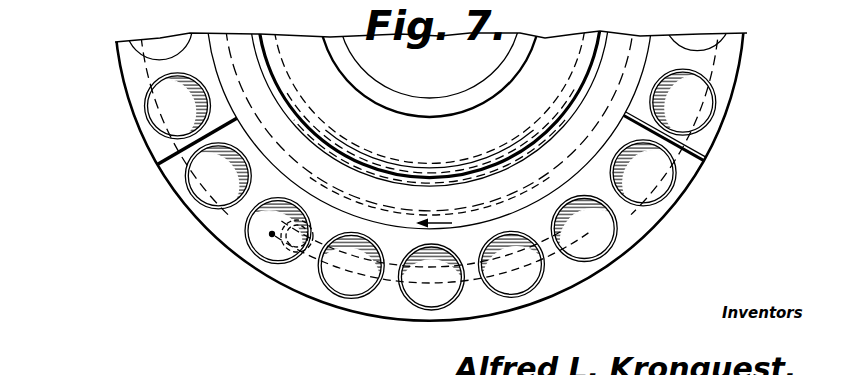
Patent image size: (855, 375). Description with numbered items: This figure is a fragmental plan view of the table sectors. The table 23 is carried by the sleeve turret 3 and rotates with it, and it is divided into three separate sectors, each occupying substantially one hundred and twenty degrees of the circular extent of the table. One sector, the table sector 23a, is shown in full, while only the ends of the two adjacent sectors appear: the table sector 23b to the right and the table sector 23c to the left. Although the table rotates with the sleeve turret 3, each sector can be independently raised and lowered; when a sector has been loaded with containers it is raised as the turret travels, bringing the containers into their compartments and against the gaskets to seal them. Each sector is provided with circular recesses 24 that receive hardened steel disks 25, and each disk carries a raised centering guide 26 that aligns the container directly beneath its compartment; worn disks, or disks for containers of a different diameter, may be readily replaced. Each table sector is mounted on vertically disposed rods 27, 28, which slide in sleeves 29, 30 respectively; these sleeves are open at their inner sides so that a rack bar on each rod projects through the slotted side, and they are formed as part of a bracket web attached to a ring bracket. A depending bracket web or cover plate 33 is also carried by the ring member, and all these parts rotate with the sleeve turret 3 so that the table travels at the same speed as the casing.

The sleeve turret 3 is at (582, 56).
The table 23 is at (650, 244).
The table sector 23a is at (219, 223).
The table sector 23b is at (727, 66).
The table sector 23c is at (133, 75).
The circular recesses 24 is at (216, 180).
The hardened steel disks 25 is at (271, 237).
The raised centering guide 26 is at (267, 209).
The rod 27 is at (352, 202).
The rod 28 is at (481, 172).
The sleeve 29 is at (310, 218).
The sleeve 30 is at (534, 190).
The depending bracket web or cover plate 33 is at (392, 265).